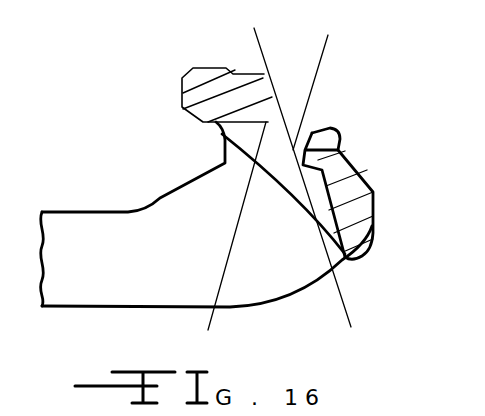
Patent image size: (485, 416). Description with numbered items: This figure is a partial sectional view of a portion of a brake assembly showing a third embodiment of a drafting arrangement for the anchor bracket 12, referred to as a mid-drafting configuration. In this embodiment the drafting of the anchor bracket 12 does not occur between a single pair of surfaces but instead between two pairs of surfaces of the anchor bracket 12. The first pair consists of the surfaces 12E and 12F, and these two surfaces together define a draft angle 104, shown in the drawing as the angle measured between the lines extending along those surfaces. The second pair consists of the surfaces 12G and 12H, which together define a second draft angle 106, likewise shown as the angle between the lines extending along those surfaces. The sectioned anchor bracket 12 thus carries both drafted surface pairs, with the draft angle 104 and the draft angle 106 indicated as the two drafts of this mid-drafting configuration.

The anchor bracket 12 is at (152, 208).
The first pair surface 12E is at (268, 122).
The first pair surface 12F is at (312, 134).
The second pair surface 12G is at (270, 123).
The second pair surface 12H is at (252, 170).
The draft angle 104 is at (256, 37).
The draft angle 106 is at (208, 328).